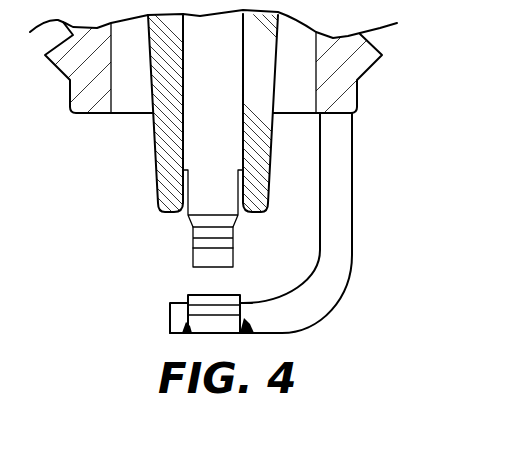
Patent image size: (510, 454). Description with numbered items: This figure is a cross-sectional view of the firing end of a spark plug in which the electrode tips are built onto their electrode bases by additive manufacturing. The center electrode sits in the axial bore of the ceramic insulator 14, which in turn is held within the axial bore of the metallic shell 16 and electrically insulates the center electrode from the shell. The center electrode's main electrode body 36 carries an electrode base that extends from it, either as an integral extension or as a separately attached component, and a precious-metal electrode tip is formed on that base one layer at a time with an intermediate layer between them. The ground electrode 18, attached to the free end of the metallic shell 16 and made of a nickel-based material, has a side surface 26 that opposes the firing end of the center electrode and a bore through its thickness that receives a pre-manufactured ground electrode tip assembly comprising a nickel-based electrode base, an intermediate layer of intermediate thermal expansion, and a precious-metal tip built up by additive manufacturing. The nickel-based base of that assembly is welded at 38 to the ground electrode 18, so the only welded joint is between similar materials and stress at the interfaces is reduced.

The insulator 14 is at (262, 151).
The metallic shell 16 is at (343, 75).
The ground electrode 18 is at (323, 295).
The side surface 26 is at (178, 300).
The main electrode body 36 is at (223, 98).
The welded joint 38 is at (240, 326).